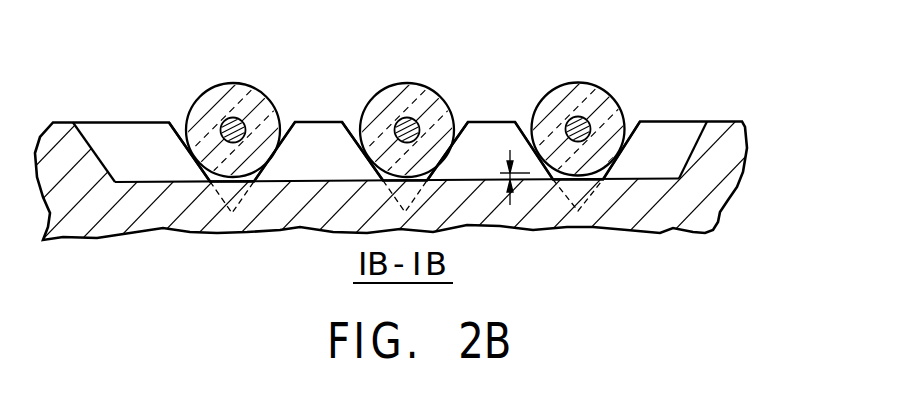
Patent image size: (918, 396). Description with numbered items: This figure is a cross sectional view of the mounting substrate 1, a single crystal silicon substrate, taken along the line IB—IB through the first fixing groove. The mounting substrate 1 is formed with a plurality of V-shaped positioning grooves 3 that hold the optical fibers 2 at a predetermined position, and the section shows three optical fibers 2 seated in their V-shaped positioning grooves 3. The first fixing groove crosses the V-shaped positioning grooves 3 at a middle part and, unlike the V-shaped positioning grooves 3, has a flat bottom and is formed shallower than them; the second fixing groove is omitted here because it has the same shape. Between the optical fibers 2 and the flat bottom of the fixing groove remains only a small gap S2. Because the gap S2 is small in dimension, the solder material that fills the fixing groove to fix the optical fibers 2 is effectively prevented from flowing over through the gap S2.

The mounting substrate 1 is at (163, 248).
The optical fiber 2 is at (249, 87).
The V-shaped positioning groove 3 is at (291, 122).
The gap S2 is at (505, 184).